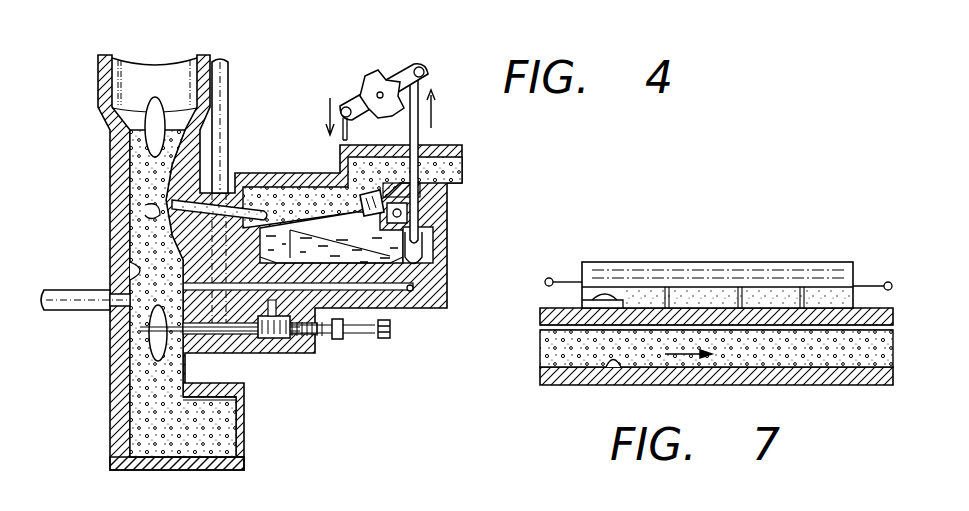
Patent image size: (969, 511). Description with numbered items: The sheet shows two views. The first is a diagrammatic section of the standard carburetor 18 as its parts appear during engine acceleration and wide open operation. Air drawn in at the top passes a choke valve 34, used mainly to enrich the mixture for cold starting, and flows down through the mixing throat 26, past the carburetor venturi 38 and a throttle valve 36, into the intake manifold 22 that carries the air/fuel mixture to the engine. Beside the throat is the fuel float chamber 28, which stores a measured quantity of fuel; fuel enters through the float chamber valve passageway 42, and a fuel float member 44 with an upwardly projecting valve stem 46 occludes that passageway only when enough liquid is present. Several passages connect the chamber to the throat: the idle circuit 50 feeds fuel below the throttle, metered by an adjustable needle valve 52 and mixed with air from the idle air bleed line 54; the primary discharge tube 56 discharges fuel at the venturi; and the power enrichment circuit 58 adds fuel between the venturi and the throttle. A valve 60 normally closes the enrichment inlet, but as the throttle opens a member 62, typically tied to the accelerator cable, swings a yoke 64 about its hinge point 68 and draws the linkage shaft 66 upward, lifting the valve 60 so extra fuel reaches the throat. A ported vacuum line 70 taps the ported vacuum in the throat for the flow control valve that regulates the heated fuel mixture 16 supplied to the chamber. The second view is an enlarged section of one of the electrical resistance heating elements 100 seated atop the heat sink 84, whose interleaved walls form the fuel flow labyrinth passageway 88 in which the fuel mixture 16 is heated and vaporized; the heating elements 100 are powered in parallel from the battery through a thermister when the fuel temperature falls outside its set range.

In FIG. 4, the fuel mixture 16 is at (180, 470).
In FIG. 7, the fuel mixture 16 is at (790, 355).
In FIG. 4, the carburetor 18 is at (92, 226).
In FIG. 4, the intake manifold 22 is at (222, 443).
In FIG. 4, the mixing throat 26 is at (145, 270).
In FIG. 4, the fuel float chamber 28 is at (288, 186).
In FIG. 4, the choke valve 34 is at (158, 116).
In FIG. 4, the throttle valve 36 is at (150, 376).
In FIG. 4, the carburetor venturi 38 is at (148, 213).
In FIG. 4, the float chamber valve passageway 42 is at (368, 172).
In FIG. 4, the fuel float member 44 is at (370, 223).
In FIG. 4, the valve stem 46 is at (400, 206).
In FIG. 4, the idle circuit 50 is at (228, 334).
In FIG. 4, the adjustable needle valve 52 is at (360, 338).
In FIG. 4, the idle air bleed line 54 is at (229, 94).
In FIG. 4, the primary discharge tube 56 is at (238, 178).
In FIG. 4, the power enrichment circuit 58 is at (412, 310).
In FIG. 4, the valve 60 is at (422, 251).
In FIG. 4, the member 62 is at (345, 107).
In FIG. 4, the yoke 64 is at (418, 67).
In FIG. 4, the linkage shaft 66 is at (418, 137).
In FIG. 4, the hinge point 68 is at (372, 84).
In FIG. 4, the ported vacuum line 70 is at (87, 312).
In FIG. 7, the heat sink 84 is at (670, 386).
In FIG. 7, the fuel flow labyrinth passageway 88 is at (608, 368).
In FIG. 7, the electrical resistance heating elements 100 is at (722, 272).